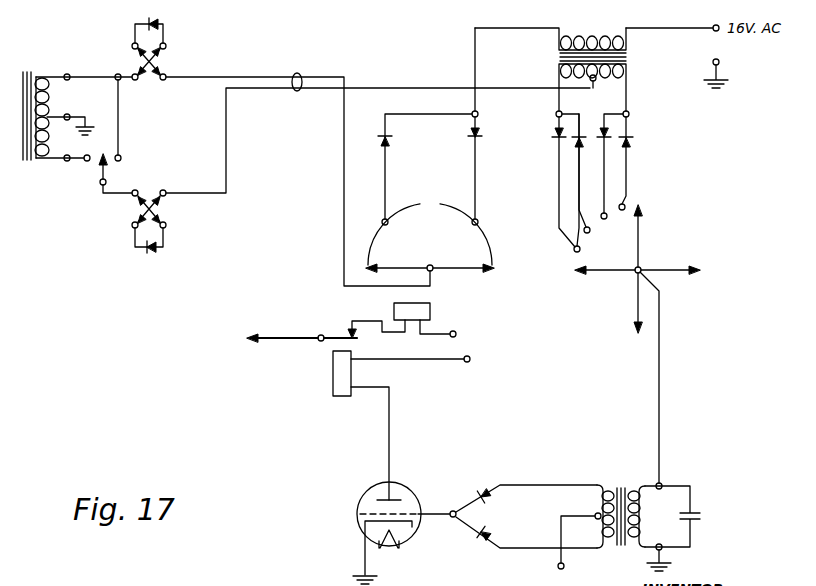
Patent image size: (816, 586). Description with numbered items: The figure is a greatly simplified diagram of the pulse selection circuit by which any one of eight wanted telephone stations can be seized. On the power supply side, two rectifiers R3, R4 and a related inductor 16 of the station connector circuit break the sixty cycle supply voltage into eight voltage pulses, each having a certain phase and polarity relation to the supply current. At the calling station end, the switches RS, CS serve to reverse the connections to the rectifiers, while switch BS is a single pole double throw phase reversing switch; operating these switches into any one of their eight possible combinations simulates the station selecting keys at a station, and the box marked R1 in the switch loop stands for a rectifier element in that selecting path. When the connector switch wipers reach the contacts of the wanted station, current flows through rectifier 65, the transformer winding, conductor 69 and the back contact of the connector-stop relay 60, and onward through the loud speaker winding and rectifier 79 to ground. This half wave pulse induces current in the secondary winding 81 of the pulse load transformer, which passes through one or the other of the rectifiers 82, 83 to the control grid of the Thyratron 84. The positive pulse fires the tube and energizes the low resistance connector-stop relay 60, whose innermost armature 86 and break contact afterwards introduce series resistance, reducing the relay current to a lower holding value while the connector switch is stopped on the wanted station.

The inductor 16 is at (586, 40).
The conductor 69 is at (677, 28).
The rectifier 79 is at (148, 252).
The connector-stop relay 60 is at (333, 381).
The rectifier 65 is at (431, 310).
The innermost armature and break contact 86 is at (341, 336).
The Thyratron 84 is at (358, 528).
The rectifier 82 is at (479, 491).
The rectifier 83 is at (477, 541).
The secondary winding of the pulse load transformer 81 is at (602, 510).
The rectifier R3 is at (396, 133).
The rectifier R4 is at (486, 133).
The switch RS is at (160, 61).
The switch CS is at (161, 209).
The phase reversing switch BS is at (100, 173).
The rectifier R1 or R2 R1 is at (156, 19).